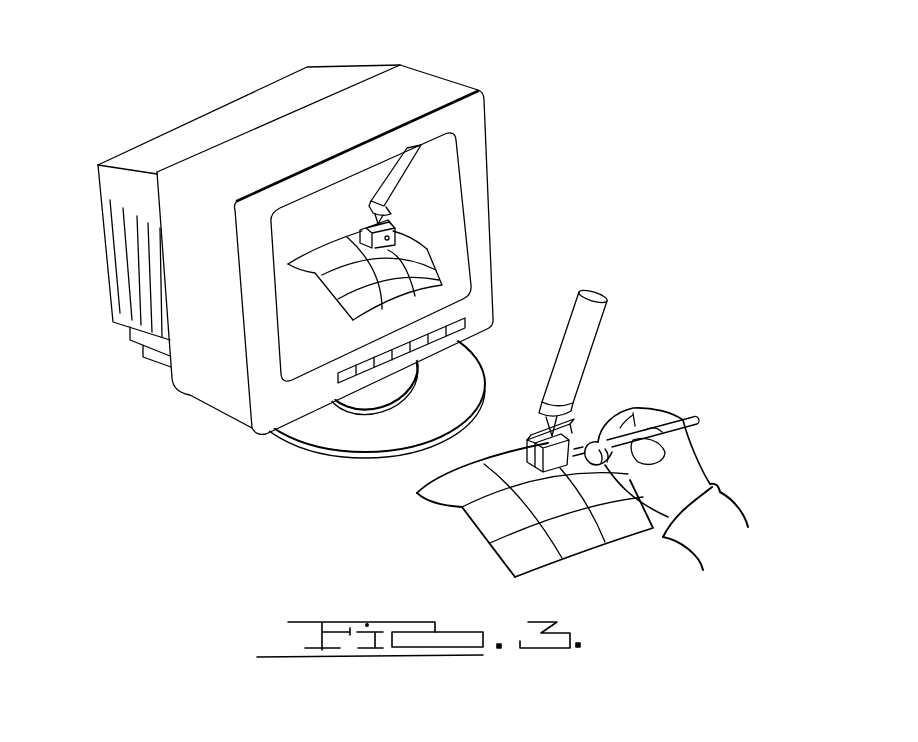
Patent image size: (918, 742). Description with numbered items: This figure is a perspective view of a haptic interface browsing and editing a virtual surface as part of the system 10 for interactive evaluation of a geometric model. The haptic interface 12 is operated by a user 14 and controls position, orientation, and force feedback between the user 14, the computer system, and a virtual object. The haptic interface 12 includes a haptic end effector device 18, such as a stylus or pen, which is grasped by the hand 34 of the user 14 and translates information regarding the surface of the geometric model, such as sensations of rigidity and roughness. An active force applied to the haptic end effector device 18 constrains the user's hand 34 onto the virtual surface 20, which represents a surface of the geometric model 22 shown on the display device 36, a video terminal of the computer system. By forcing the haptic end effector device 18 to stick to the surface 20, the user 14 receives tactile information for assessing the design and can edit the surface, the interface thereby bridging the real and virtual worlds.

The system 10 is at (156, 103).
The haptic interface 12 is at (607, 323).
The user 14 is at (112, 272).
The haptic end effector device 18 is at (395, 193).
The virtual surface 20 is at (437, 505).
The geometric model 22 is at (331, 247).
The hand 34 is at (683, 457).
The display device 36 is at (484, 150).